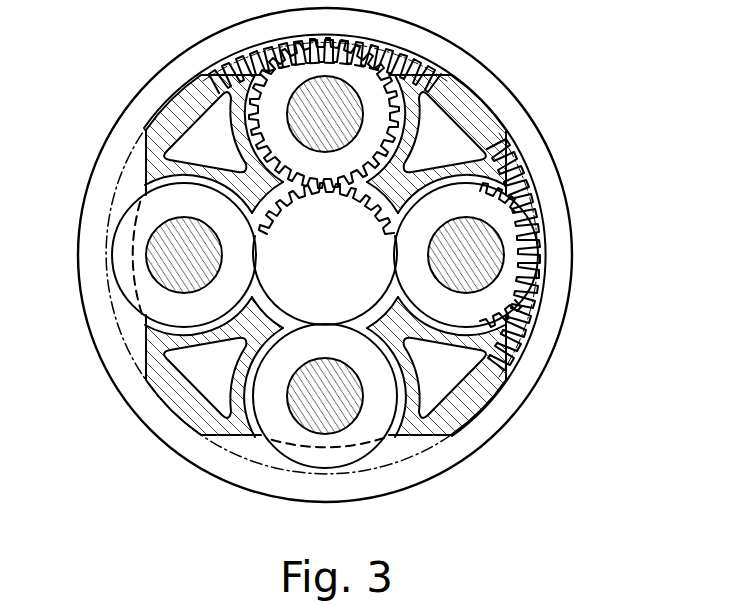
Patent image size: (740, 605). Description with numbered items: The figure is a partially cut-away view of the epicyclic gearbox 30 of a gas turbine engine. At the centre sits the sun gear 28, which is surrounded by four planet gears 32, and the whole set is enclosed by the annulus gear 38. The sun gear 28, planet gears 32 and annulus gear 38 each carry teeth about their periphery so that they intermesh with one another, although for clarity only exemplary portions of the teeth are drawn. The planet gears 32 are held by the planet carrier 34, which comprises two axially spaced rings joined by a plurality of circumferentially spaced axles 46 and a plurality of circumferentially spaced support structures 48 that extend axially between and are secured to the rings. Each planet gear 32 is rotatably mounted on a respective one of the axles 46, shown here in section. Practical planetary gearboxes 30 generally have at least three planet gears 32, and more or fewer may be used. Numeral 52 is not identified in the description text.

The sun gear 28 is at (343, 249).
The epicyclic gearbox 30 is at (359, 306).
The planet gear 32 is at (473, 217).
The planet carrier 34 is at (348, 260).
The annulus gear 38 is at (570, 210).
The axle 46 is at (497, 263).
The support structure 48 is at (477, 100).
The bearing 52 is at (434, 596).